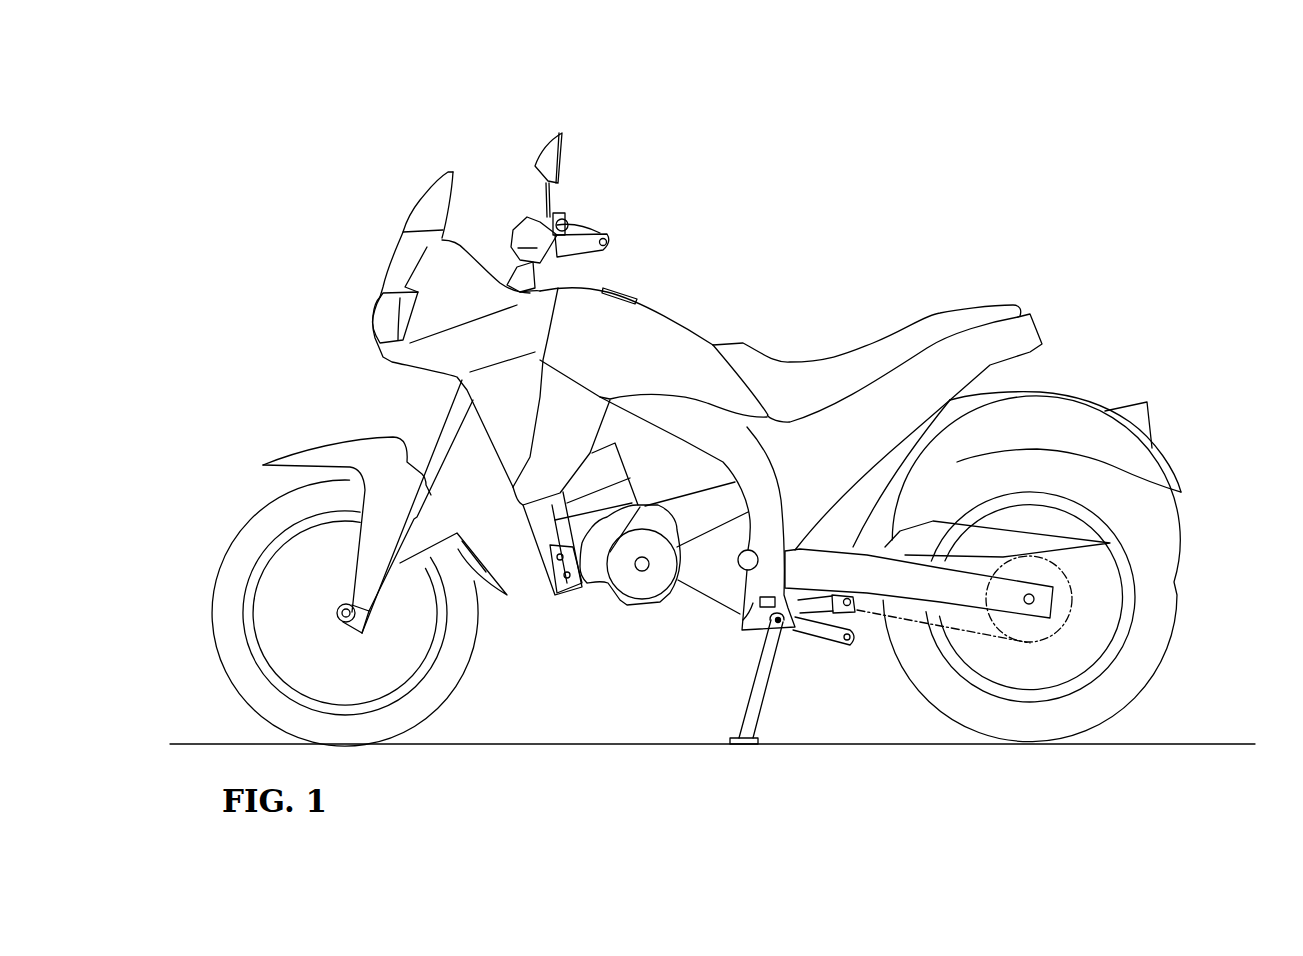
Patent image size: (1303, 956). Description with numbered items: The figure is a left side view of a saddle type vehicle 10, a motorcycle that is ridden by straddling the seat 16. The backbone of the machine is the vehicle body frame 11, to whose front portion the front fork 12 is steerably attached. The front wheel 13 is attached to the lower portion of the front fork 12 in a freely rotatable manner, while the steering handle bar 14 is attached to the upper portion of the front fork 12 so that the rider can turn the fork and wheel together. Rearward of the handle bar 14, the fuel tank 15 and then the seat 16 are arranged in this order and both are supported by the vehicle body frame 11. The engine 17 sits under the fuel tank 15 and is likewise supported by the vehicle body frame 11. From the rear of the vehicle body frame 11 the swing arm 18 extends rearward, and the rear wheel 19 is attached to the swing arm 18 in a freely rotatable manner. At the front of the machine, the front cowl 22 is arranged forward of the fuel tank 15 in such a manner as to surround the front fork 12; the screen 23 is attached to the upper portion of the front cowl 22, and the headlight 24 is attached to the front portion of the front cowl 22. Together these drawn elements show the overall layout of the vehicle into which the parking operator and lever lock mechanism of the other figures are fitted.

The saddle type vehicle 10 is at (266, 181).
The vehicle body frame 11 is at (543, 530).
The front fork 12 is at (450, 420).
The front wheel 13 is at (243, 527).
The handle bar 14 is at (562, 217).
The fuel tank 15 is at (653, 323).
The seat 16 is at (805, 375).
The engine 17 is at (648, 583).
The swing arm 18 is at (905, 597).
The rear wheel 19 is at (1150, 603).
The front cowl 22 is at (410, 243).
The screen 23 is at (440, 190).
The headlight 24 is at (382, 320).